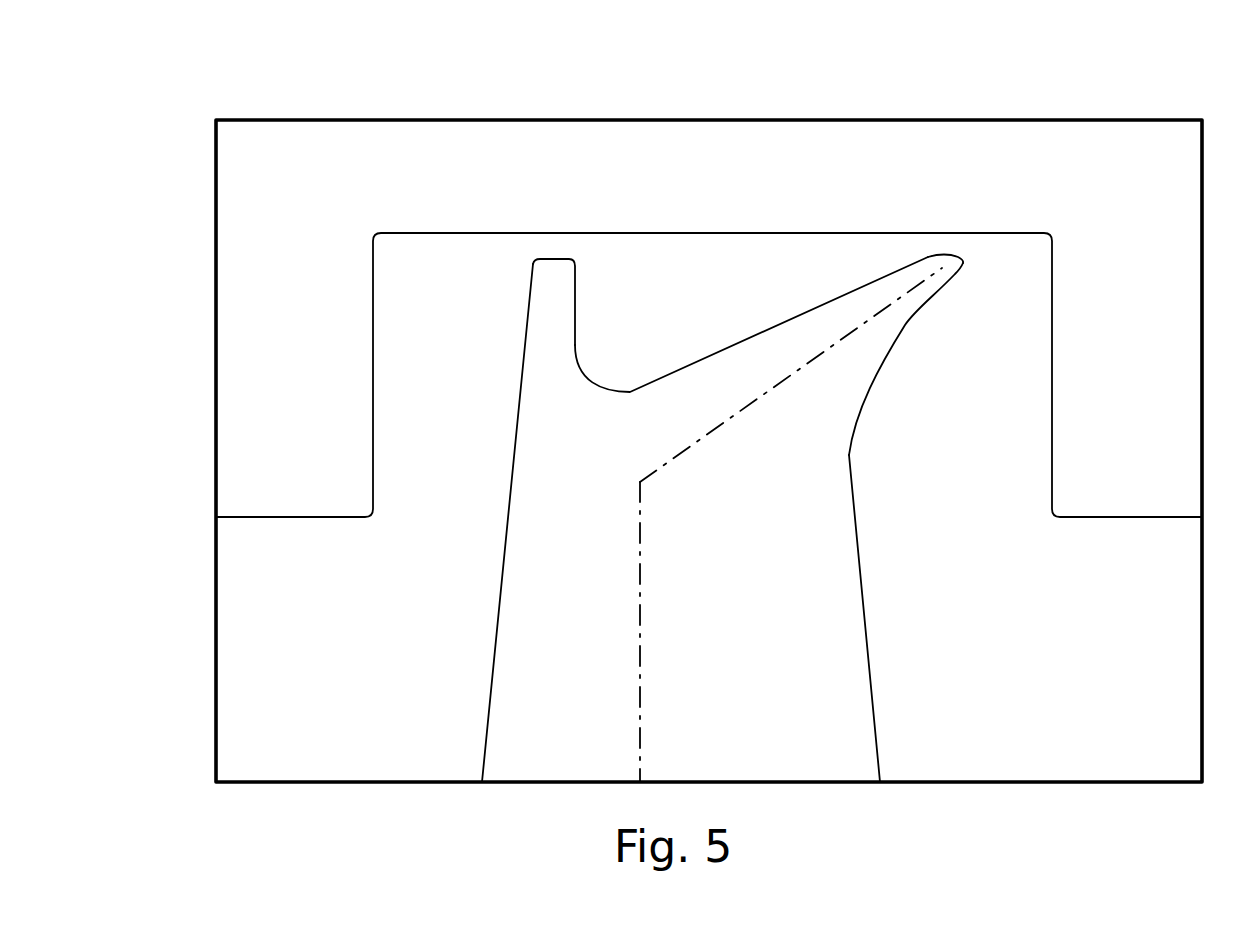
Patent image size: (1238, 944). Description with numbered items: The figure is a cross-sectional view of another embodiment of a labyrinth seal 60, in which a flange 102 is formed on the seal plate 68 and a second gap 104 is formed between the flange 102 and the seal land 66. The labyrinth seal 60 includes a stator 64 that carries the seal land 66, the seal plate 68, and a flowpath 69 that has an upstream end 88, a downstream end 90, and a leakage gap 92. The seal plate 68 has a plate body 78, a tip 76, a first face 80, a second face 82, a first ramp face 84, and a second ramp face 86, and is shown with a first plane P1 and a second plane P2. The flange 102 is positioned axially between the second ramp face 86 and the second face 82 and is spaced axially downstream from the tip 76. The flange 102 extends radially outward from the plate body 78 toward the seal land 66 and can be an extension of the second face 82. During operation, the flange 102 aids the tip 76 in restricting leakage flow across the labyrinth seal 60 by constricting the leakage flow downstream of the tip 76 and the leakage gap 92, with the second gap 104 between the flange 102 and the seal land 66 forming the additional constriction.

The labyrinth seal 60 is at (258, 694).
The stator 64 is at (305, 213).
The seal land 66 is at (740, 177).
The seal plate 68 is at (776, 414).
The flowpath 69 is at (1035, 653).
The tip 76 is at (964, 263).
The plate body 78 is at (815, 699).
The first face 80 is at (860, 608).
The second face 82 is at (499, 603).
The first ramp face 84 is at (911, 322).
The second ramp face 86 is at (818, 308).
The upstream end 88 is at (1135, 537).
The downstream end 90 is at (323, 566).
The leakage gap 92 is at (948, 246).
The flange 102 is at (555, 297).
The second gap 104 is at (558, 251).
The first plane P1 is at (640, 660).
The second plane P2 is at (745, 410).